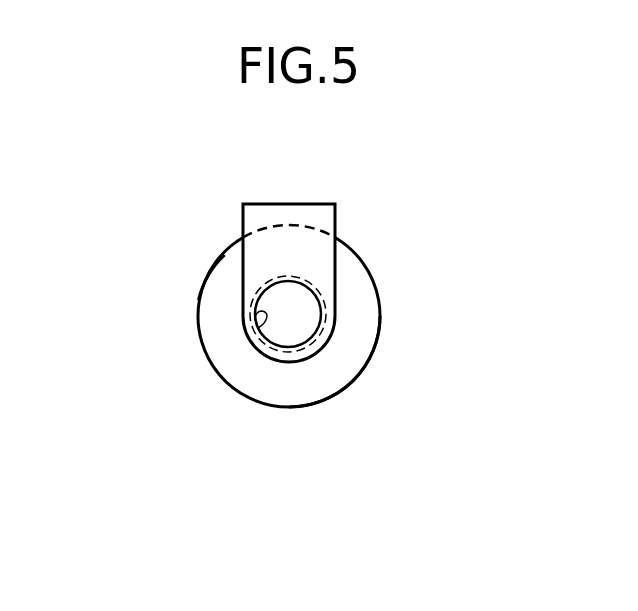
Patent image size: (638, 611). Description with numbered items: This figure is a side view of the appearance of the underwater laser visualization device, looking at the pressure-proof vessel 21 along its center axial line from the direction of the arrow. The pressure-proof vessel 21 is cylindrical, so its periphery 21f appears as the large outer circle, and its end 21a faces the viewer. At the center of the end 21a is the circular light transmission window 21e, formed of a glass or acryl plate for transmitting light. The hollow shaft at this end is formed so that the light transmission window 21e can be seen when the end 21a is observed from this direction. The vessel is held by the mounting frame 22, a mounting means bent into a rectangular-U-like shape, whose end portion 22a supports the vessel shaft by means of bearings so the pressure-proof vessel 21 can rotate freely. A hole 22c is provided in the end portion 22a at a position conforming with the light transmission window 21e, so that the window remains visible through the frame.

The pressure-proof vessel 21 is at (170, 313).
The end 21a is at (332, 377).
The light transmission window 21e is at (307, 318).
The periphery 21f is at (213, 268).
The mounting frame 22 is at (298, 203).
The end portion 22a is at (310, 253).
The hole 22c is at (258, 328).